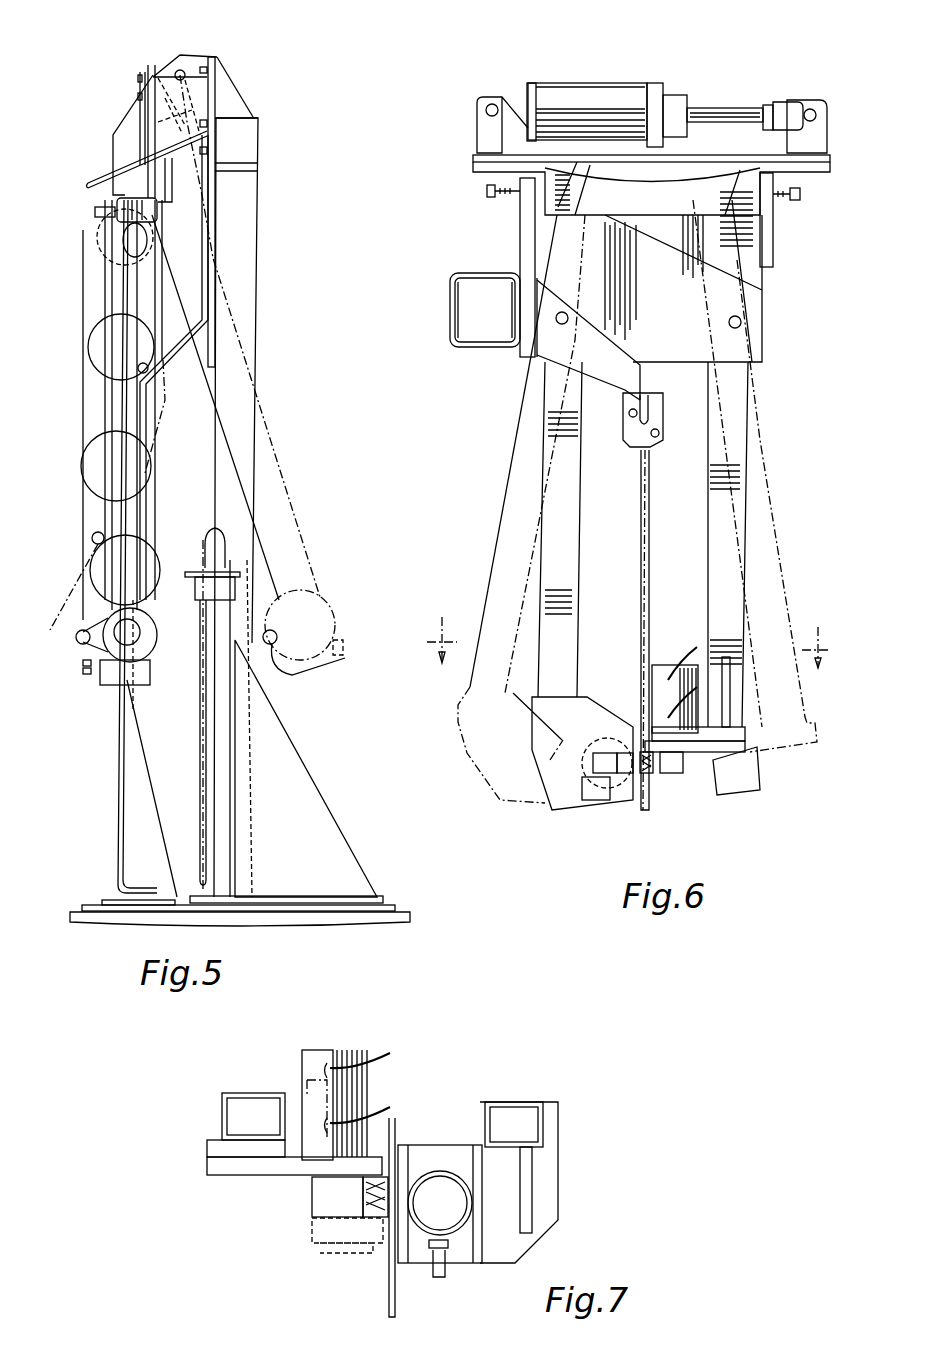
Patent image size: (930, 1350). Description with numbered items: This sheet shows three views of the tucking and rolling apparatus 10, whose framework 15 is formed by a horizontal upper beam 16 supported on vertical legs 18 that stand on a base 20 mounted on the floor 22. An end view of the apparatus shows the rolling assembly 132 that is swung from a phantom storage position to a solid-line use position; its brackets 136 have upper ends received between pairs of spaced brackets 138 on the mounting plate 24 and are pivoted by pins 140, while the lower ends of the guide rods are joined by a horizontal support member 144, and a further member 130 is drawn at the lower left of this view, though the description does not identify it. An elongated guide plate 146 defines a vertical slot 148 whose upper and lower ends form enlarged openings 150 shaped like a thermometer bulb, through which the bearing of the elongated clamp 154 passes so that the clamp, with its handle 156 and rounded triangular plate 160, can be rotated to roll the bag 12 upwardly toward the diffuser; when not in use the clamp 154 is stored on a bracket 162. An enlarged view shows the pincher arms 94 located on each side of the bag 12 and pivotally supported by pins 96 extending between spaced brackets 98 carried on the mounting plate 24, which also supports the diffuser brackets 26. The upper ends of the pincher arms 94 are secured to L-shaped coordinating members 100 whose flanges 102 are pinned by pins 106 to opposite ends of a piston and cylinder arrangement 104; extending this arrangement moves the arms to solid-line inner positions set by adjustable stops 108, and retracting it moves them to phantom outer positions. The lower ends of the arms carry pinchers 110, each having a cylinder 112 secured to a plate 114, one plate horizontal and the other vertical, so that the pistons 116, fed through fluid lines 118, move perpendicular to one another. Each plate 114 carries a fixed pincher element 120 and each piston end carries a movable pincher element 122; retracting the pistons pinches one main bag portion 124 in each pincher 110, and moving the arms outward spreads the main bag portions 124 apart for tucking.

In FIG. 5, the tucking and rolling apparatus 10 is at (282, 233).
In FIG. 6, the bag 12 is at (650, 645).
In FIG. 5, the framework 15 is at (267, 109).
In FIG. 6, the framework 15 is at (445, 299).
In FIG. 5, the horizontal upper beam 16 is at (245, 148).
In FIG. 6, the horizontal upper beam 16 is at (490, 345).
In FIG. 5, the vertical legs 18 is at (245, 305).
In FIG. 5, the base 20 is at (252, 896).
In FIG. 5, the floor 22 is at (408, 918).
In FIG. 5, the mounting plate 24 is at (222, 90).
In FIG. 6, the mounting plate 24 is at (520, 250).
In FIG. 6, the diffuser brackets 26 is at (605, 352).
In FIG. 6, the pincher arms 94 is at (561, 502).
In FIG. 7, the pincher arms 94 is at (214, 1120).
In FIG. 6, the pins 96 is at (570, 318).
In FIG. 6, the brackets 98 is at (672, 355).
In FIG. 6, the coordinating members 100 is at (520, 168).
In FIG. 6, the flanges 102 is at (825, 120).
In FIG. 6, the piston and cylinder arrangement 104 is at (604, 76).
In FIG. 6, the pins 106 is at (496, 106).
In FIG. 6, the adjustable stops 108 is at (490, 198).
In FIG. 6, the pinchers 110 is at (590, 810).
In FIG. 7, the pinchers 110 is at (440, 1133).
In FIG. 6, the cylinder 112 is at (665, 668).
In FIG. 7, the cylinder 112 is at (312, 1068).
In FIG. 6, the plate 114 is at (730, 748).
In FIG. 7, the plate 114 is at (308, 1165).
In FIG. 7, the pistons 116 is at (310, 1110).
In FIG. 6, the fluid lines 118 is at (700, 675).
In FIG. 7, the fluid lines 118 is at (378, 1100).
In FIG. 6, the fixed pincher element 120 is at (652, 775).
In FIG. 7, the fixed pincher element 120 is at (372, 1178).
In FIG. 6, the movable pincher element 122 is at (615, 790).
In FIG. 7, the movable pincher element 122 is at (360, 1232).
In FIG. 6, the main bag portion 124 is at (635, 612).
In FIG. 5, the rail 130 is at (117, 810).
In FIG. 5, the rolling assembly 132 is at (180, 520).
In FIG. 5, the brackets 136 is at (125, 125).
In FIG. 5, the brackets 138 is at (212, 57).
In FIG. 5, the pins 140 is at (181, 70).
In FIG. 5, the horizontal support member 144 is at (148, 680).
In FIG. 5, the guide plate 146 is at (117, 410).
In FIG. 5, the vertical slot 148 is at (94, 290).
In FIG. 5, the enlarged openings 150 is at (120, 232).
In FIG. 5, the elongated clamp 154 is at (226, 776).
In FIG. 5, the handle 156 is at (208, 545).
In FIG. 5, the plate 160 is at (259, 582).
In FIG. 5, the bracket 162 is at (205, 590).